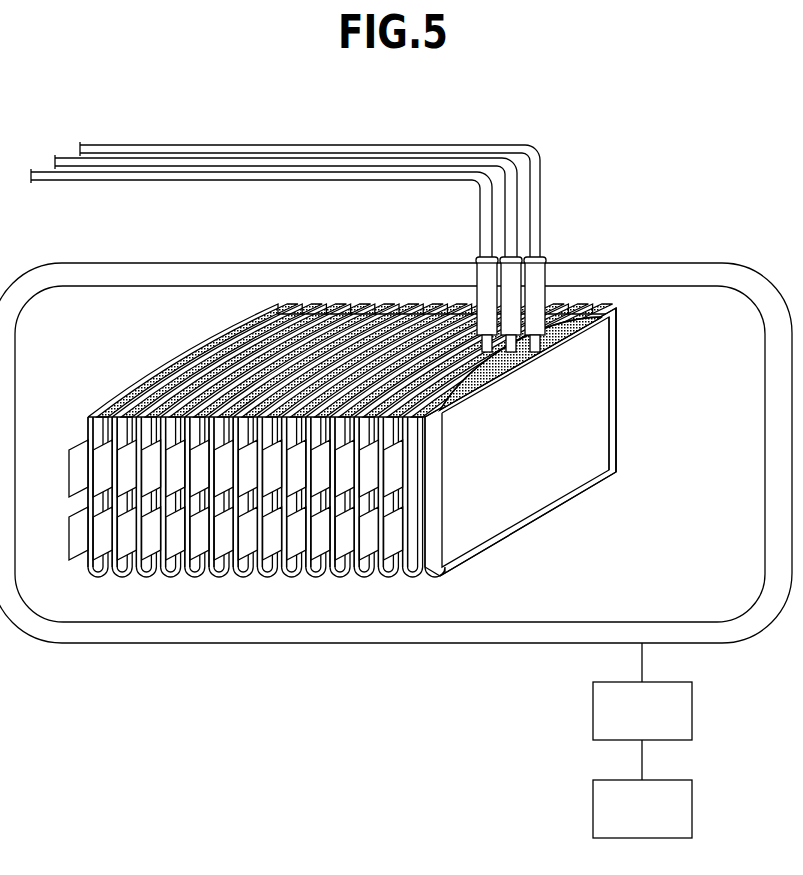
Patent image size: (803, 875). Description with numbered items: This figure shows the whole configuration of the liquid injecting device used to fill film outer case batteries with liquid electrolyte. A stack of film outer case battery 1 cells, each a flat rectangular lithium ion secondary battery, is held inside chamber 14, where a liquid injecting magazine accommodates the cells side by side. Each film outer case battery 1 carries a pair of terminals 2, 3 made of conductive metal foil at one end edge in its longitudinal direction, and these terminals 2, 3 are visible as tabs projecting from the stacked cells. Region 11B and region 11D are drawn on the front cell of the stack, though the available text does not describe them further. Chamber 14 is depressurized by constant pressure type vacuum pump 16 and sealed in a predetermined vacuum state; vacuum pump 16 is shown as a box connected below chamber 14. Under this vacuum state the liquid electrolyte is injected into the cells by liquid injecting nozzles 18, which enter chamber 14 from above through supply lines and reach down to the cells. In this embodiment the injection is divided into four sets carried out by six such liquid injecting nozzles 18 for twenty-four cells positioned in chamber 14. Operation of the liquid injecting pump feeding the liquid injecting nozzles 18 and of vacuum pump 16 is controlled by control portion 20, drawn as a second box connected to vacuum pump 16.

The film outer case battery 1 is at (552, 483).
The terminal 2 is at (417, 468).
The terminal 3 is at (415, 540).
The side wall 11B is at (617, 367).
The insulating sheet 11D is at (540, 373).
The chamber 14 is at (677, 266).
The vacuum pump 16 is at (682, 712).
The liquid injecting nozzle 18 is at (537, 298).
The control portion 20 is at (672, 810).